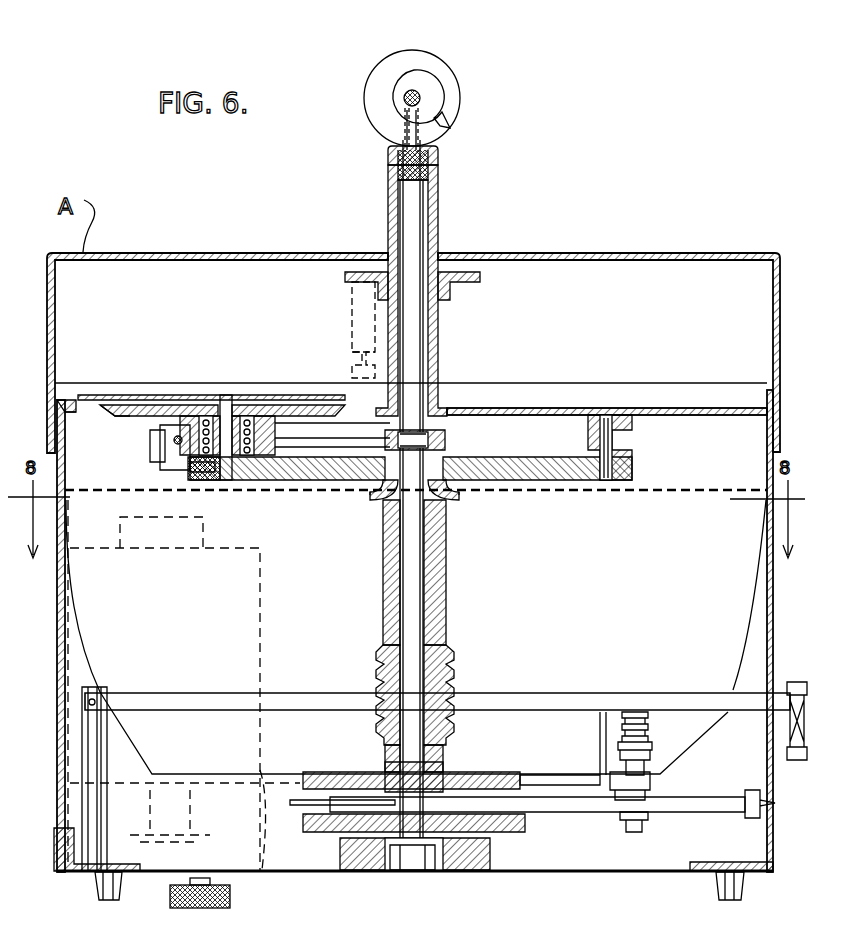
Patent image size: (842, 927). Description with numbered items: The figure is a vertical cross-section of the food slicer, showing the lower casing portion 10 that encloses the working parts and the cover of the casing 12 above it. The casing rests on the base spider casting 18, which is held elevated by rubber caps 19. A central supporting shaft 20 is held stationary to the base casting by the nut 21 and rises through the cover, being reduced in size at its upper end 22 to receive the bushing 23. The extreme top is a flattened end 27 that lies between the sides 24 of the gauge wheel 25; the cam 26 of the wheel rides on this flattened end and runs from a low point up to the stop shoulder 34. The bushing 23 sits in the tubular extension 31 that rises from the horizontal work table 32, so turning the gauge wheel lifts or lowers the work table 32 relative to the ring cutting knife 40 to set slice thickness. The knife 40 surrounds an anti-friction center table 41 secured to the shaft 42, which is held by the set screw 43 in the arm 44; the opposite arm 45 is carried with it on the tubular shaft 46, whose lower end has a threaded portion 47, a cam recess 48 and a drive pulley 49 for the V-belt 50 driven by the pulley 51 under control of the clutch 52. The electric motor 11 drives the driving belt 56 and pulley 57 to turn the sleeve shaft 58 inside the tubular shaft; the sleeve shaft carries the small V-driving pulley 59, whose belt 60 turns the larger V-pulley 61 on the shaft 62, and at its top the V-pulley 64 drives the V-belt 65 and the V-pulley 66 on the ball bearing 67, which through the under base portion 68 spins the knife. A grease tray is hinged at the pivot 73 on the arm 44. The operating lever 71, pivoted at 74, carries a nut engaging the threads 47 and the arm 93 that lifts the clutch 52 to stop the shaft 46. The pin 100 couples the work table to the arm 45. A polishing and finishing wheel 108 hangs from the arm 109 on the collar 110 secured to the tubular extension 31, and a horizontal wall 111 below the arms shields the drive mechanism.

The lower casing portion 10 is at (773, 560).
The electric motor 11 is at (213, 613).
The cover of the casing 12 is at (730, 253).
The base spider casting 18 is at (480, 872).
The rubber caps 19 is at (95, 890).
The supporting shaft 20 is at (413, 617).
The nut 21 is at (412, 872).
The reduced upper end of shaft 22 is at (412, 210).
The bushing 23 is at (388, 160).
The sides of the gauge wheel 24 is at (445, 57).
The gauge wheel 25 is at (380, 60).
The cam 26 is at (442, 92).
The flattened end of the shaft 27 is at (420, 136).
The tubular extension 31 is at (440, 330).
The work table 32 is at (530, 410).
The stop shoulder 34 is at (432, 108).
The ring cutting knife 40 is at (75, 405).
The anti-friction center table 41 is at (118, 395).
The shaft 42 is at (228, 395).
The set screw 43 is at (175, 462).
The arm 44 is at (280, 470).
The arm 45 is at (510, 478).
The tubular shaft 46 is at (438, 588).
The threaded portion 47 is at (455, 680).
The cam recess 48 is at (443, 755).
The drive pulley 49 is at (520, 772).
The V-belt 50 is at (560, 775).
The pulley 51 is at (660, 780).
The clutch 52 is at (648, 730).
The driving belt 56 is at (262, 842).
The pulley 57 is at (470, 872).
The sleeve shaft 58 is at (400, 588).
The small V-driving pulley 59 is at (330, 805).
The belt 60 is at (525, 830).
The V-pulley 61 is at (745, 795).
The shaft 62 is at (634, 832).
The V-pulley 64 is at (430, 433).
The V-belt 65 is at (400, 440).
The V-pulley 66 is at (120, 420).
The ball bearing 67 is at (205, 416).
The under base portion 68 is at (130, 418).
The operating lever 71 is at (575, 693).
The pivot 73 is at (150, 445).
The pivot 74 is at (88, 710).
The arm 93 is at (598, 722).
The pin 100 is at (600, 482).
The polishing and finishing wheel 108 is at (362, 368).
The arm 109 is at (362, 328).
The collar 110 is at (480, 277).
The horizontal wall 111 is at (680, 492).